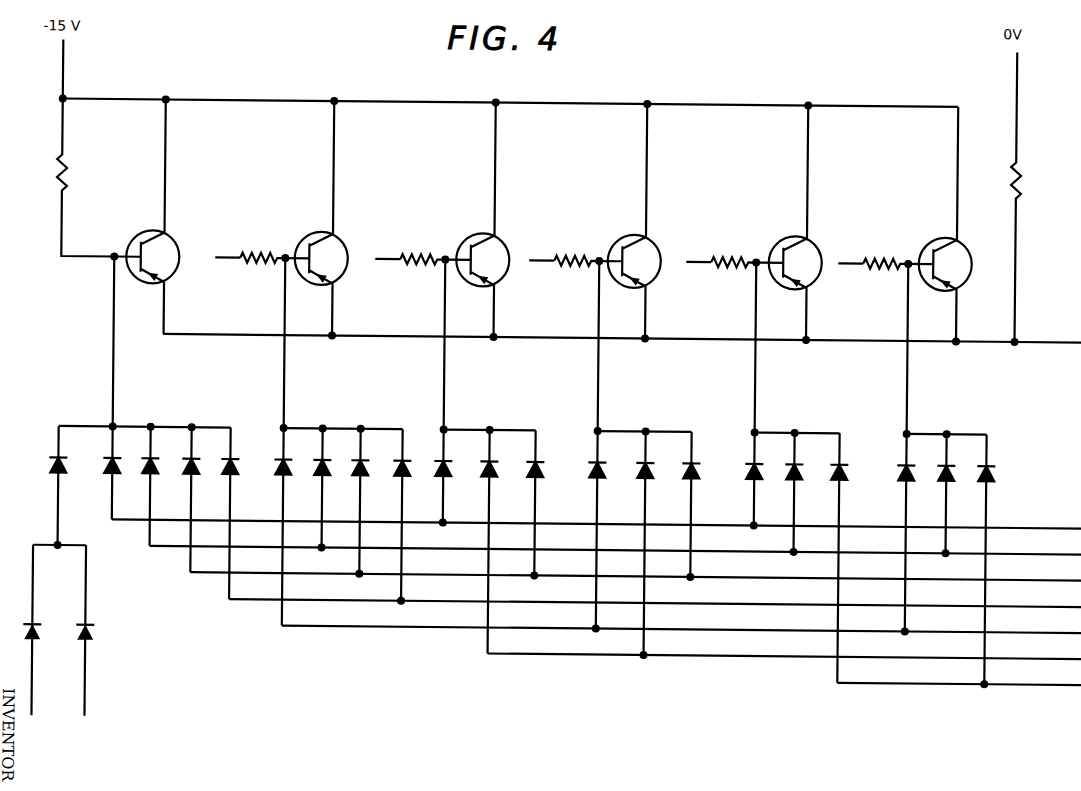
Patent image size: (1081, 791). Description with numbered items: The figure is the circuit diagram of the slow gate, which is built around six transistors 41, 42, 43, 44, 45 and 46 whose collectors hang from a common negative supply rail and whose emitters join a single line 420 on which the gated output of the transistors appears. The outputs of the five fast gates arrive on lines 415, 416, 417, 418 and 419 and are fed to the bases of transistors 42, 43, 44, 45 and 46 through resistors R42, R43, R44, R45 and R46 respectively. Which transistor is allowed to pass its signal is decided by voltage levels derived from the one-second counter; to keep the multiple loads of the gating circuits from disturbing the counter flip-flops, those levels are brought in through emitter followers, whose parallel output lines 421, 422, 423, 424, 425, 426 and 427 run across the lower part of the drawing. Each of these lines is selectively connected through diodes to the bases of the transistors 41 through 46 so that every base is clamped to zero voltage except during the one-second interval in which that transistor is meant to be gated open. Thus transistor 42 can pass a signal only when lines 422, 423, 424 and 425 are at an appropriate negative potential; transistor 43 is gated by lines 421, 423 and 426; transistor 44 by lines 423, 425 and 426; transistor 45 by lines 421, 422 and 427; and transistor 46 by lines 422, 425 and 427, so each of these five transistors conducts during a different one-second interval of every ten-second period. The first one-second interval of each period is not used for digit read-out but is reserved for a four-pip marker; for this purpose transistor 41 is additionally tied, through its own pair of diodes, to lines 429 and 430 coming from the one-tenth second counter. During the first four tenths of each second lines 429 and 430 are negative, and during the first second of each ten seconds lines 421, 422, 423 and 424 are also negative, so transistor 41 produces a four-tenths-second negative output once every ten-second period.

The transistor 41 is at (132, 241).
The transistor 42 is at (312, 238).
The transistor 43 is at (474, 238).
The transistor 44 is at (626, 238).
The transistor 45 is at (786, 238).
The transistor 46 is at (936, 238).
The resistor R42 is at (260, 254).
The resistor R43 is at (420, 254).
The resistor R44 is at (574, 254).
The resistor R45 is at (731, 254).
The resistor R46 is at (883, 254).
The line 415 is at (226, 262).
The line 416 is at (386, 262).
The line 417 is at (540, 262).
The line 418 is at (697, 262).
The line 419 is at (849, 262).
The line 420 is at (1059, 340).
The parallel output line 421 is at (1058, 523).
The parallel output line 422 is at (1058, 549).
The parallel output line 423 is at (1058, 575).
The parallel output line 424 is at (1058, 602).
The parallel output line 425 is at (1058, 628).
The parallel output line 426 is at (1058, 654).
The parallel output line 427 is at (1058, 680).
The line 429 is at (35, 685).
The line 430 is at (88, 704).